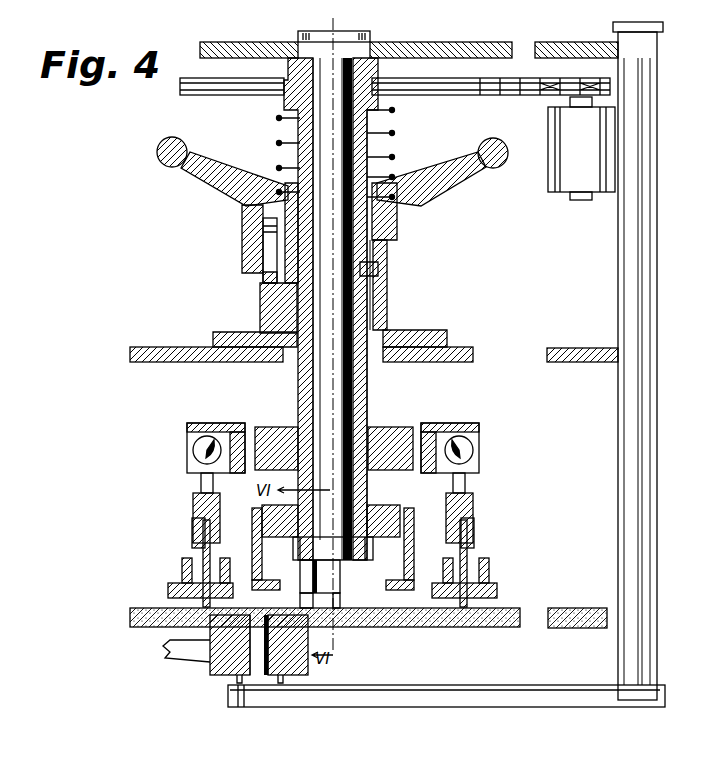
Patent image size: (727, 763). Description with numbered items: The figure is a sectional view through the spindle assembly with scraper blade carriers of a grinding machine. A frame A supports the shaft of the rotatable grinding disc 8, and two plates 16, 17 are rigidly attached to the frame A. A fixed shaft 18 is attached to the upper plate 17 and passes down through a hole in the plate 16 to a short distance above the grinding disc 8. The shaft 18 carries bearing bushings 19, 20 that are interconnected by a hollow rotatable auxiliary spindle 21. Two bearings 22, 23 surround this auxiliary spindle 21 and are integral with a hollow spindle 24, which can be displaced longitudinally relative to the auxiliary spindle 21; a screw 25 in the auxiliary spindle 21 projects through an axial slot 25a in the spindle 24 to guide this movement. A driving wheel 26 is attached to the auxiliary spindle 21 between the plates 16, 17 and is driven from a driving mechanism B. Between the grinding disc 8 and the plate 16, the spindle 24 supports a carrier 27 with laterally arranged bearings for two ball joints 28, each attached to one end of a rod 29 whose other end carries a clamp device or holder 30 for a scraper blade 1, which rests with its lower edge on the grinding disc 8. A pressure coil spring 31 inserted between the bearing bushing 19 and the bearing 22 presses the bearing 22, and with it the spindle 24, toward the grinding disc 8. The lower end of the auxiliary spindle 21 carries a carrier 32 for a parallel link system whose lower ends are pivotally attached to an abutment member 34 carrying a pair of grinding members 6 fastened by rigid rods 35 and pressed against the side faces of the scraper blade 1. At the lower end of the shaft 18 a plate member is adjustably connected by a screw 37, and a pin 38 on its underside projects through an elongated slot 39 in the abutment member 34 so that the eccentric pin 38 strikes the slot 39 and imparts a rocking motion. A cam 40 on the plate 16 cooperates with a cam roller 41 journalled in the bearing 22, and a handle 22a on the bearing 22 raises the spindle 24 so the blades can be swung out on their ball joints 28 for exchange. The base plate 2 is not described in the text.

The scraper blade 1 is at (203, 552).
The base plate 2 is at (490, 625).
The grinding members 6 is at (170, 588).
The grinding disc 8 is at (575, 612).
The plate 16 is at (552, 348).
The plate 17 is at (530, 42).
The fixed shaft 18 is at (396, 250).
The bearing bushing 19 is at (372, 62).
The bearing bushing 20 is at (298, 545).
The auxiliary spindle 21 is at (290, 155).
The bearing 22 is at (242, 215).
The handle 22a is at (500, 170).
The bearing 23 is at (400, 430).
The hollow spindle 24 is at (405, 337).
The screw 25 is at (398, 270).
The axial slot 25a is at (380, 302).
The driving wheel 26 is at (455, 96).
The carrier 27 is at (200, 425).
The ball joints 28 is at (200, 450).
The rod 29 is at (200, 482).
The clamp device or holder 30 is at (192, 530).
The pressure coil spring 31 is at (390, 153).
The carrier 32 is at (385, 510).
The abutment member 34 is at (210, 650).
The rigid rods 35 is at (252, 565).
The screw 37 is at (360, 625).
The pin 38 is at (332, 612).
The elongated slot 39 is at (295, 676).
The cam 40 is at (265, 308).
The cam roller 41 is at (265, 276).
The frame A is at (620, 545).
The driving mechanism B is at (541, 105).